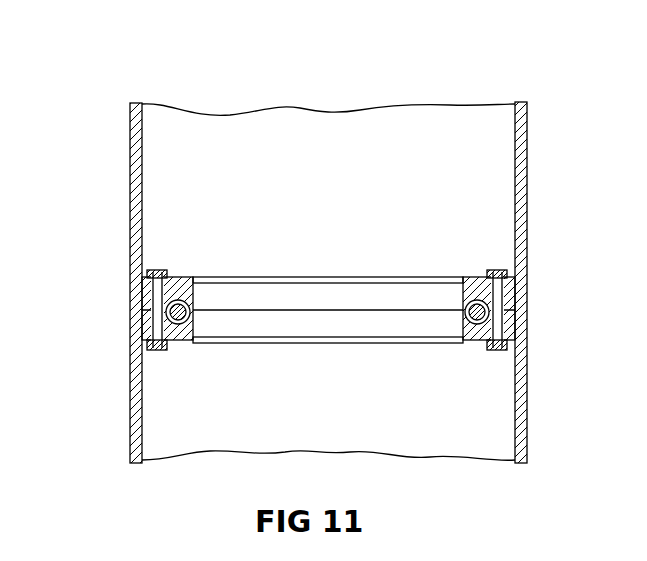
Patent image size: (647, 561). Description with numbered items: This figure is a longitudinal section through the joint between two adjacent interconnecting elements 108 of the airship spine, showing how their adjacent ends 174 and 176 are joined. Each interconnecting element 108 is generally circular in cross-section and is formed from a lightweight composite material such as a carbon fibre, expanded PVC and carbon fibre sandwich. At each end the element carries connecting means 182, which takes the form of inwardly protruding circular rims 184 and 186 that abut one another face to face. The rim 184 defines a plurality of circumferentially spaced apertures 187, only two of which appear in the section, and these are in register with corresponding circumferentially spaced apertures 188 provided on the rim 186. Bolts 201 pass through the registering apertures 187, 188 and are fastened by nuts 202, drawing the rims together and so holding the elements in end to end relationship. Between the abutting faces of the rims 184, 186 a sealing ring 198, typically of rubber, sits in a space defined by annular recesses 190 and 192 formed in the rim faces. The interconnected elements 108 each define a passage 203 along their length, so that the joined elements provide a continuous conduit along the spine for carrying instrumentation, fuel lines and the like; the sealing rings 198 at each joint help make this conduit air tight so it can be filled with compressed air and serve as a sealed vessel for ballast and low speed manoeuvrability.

The interconnecting element 108 is at (527, 170).
The adjacent end 174 is at (480, 424).
The adjacent end 176 is at (443, 117).
The connecting means 182 is at (108, 307).
The rim 184 is at (178, 277).
The rim 186 is at (200, 338).
The aperture 187 is at (140, 286).
The aperture 188 is at (137, 332).
The annular recess 190 is at (190, 278).
The annular recess 192 is at (170, 342).
The sealing ring 198 is at (189, 306).
The bolt 201 is at (156, 270).
The nut 202 is at (148, 351).
The passage 203 is at (305, 110).